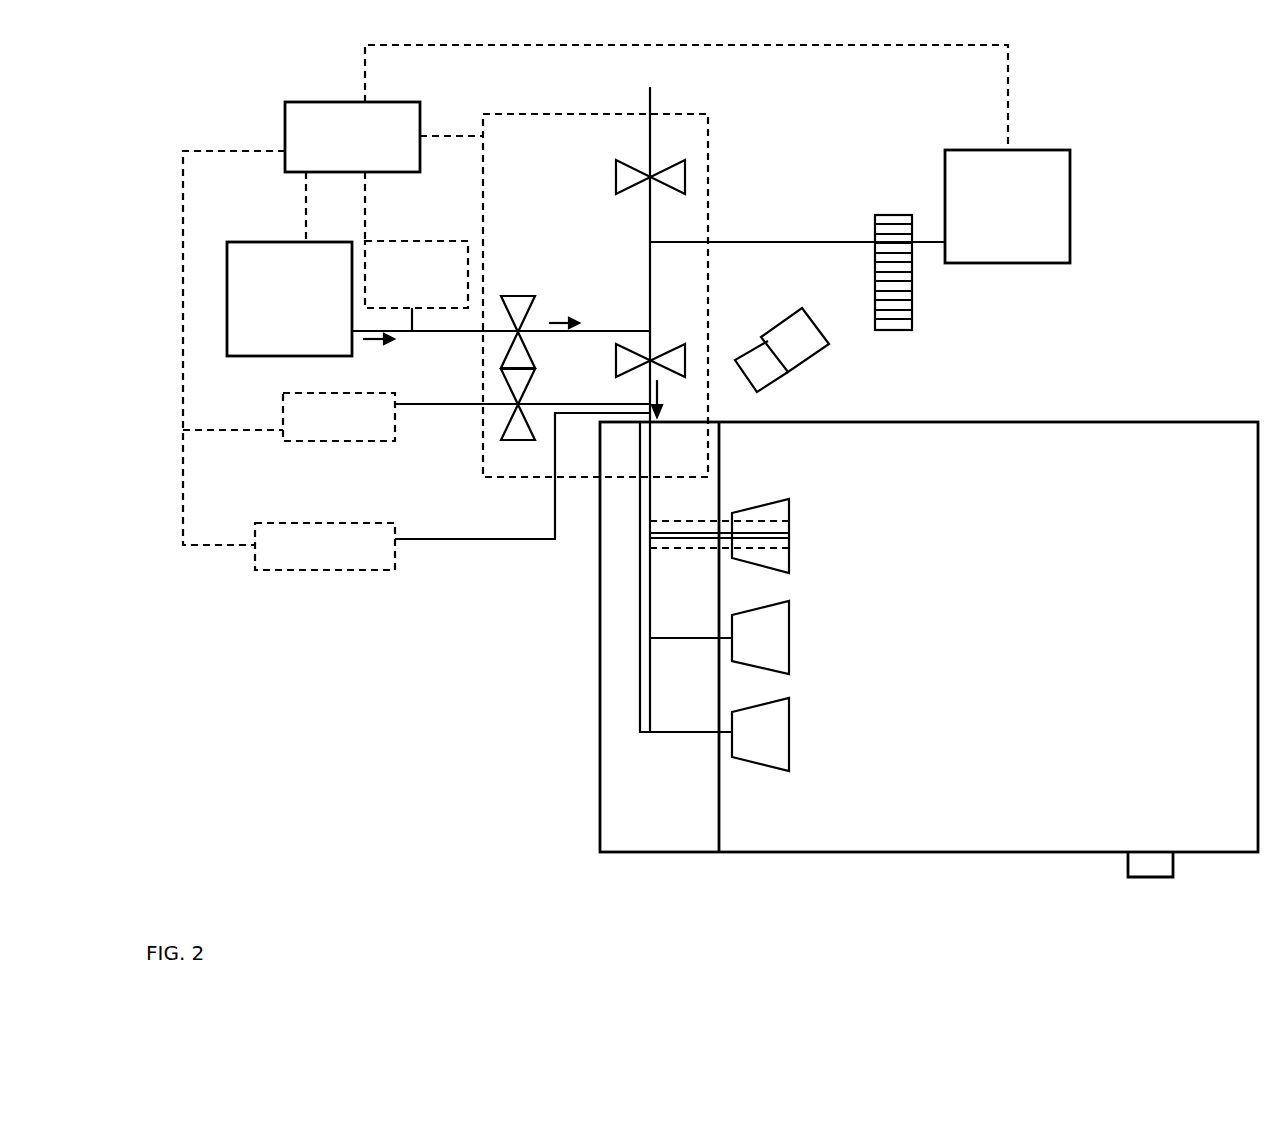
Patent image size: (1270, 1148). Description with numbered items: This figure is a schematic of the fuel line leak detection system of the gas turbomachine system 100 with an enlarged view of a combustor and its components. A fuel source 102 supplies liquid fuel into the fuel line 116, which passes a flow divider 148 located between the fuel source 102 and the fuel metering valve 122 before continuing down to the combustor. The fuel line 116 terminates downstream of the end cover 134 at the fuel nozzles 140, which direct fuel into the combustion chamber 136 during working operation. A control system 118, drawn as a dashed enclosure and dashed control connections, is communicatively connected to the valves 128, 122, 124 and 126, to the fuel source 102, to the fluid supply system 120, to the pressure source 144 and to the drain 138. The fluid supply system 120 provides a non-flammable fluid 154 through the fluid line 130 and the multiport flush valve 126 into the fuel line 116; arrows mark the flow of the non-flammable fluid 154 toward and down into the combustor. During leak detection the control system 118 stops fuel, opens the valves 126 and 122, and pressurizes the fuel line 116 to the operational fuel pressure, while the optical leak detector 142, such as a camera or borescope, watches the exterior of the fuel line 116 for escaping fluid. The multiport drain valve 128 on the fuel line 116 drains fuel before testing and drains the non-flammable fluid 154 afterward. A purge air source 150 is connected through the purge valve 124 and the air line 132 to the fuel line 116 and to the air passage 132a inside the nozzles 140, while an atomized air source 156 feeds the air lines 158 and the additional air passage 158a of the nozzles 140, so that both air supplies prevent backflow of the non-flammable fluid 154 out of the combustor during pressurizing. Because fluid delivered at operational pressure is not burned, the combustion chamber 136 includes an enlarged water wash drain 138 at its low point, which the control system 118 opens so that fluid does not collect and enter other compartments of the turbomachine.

The gas turbomachine system 100 is at (1143, 118).
The fuel source 102 is at (1071, 240).
The fuel line 116 is at (648, 224).
The control system 118 is at (285, 136).
The fluid supply system 120 is at (253, 241).
The fuel metering valve 122 is at (664, 348).
The purge valve 124 is at (503, 437).
The multiport flush valve 126 is at (534, 345).
The multiport drain valve 128 is at (615, 161).
The fluid line 130 is at (440, 335).
The air line 132 is at (437, 407).
The air passage 132a is at (789, 521).
The end cover 134 is at (600, 860).
The combustion chamber 136 is at (1178, 826).
The drain 138 is at (1125, 866).
The fuel nozzles 140 is at (789, 698).
The optical leak detector 142 is at (790, 372).
The pressure source 144 is at (421, 240).
The flow divider 148 is at (876, 215).
The purge air source 150 is at (315, 447).
The non-flammable fluid 154 is at (529, 356).
The atomized air source 156 is at (316, 573).
The air lines 158 is at (437, 548).
The air passage 158a is at (789, 548).